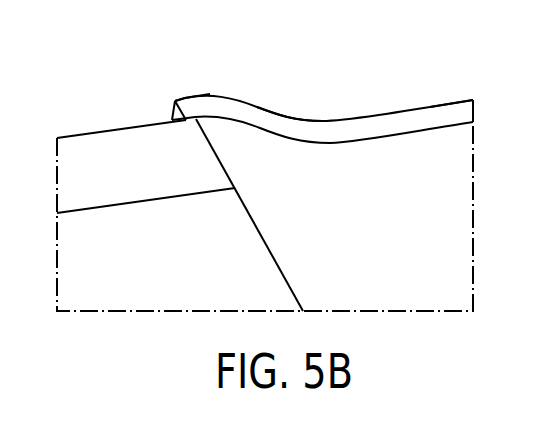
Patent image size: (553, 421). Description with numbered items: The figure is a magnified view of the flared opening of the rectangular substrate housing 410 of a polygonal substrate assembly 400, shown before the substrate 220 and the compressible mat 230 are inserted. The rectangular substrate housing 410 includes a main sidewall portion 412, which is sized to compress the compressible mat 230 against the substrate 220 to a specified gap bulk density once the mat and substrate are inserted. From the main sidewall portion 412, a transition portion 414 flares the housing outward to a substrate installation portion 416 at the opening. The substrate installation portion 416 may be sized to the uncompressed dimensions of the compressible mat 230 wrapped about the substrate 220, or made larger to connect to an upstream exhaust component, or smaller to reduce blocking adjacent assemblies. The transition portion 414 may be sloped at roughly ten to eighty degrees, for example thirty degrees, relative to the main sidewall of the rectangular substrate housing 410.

The polygonal substrate assembly 400 is at (500, 140).
The compressible mat 230 is at (123, 150).
The substrate 220 is at (130, 257).
The rectangular substrate housing 410 is at (355, 114).
The main sidewall portion 412 is at (445, 102).
The transition portion 414 is at (277, 113).
The substrate installation portion 416 is at (193, 97).